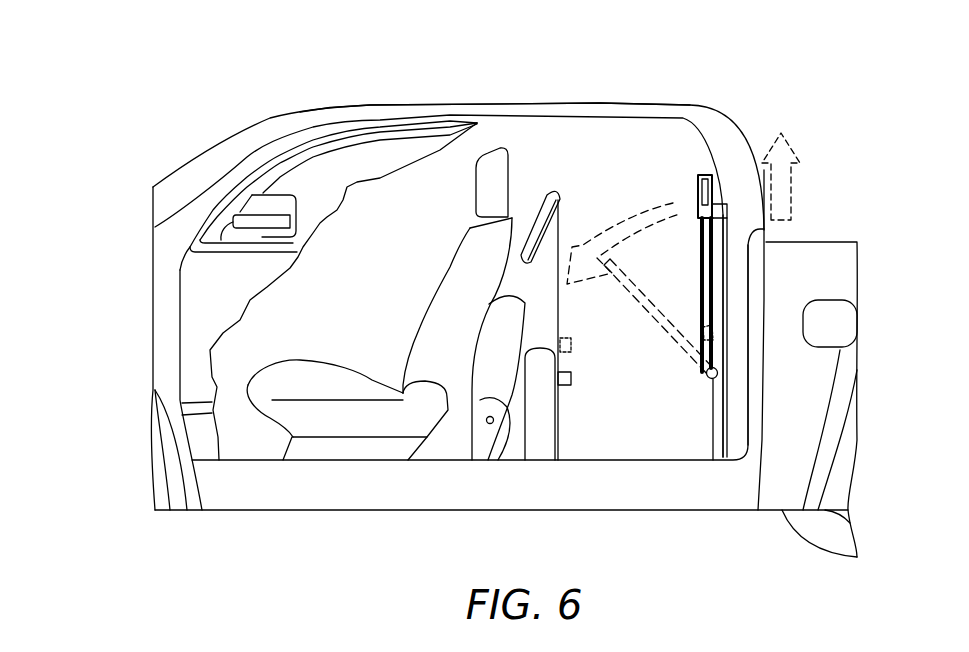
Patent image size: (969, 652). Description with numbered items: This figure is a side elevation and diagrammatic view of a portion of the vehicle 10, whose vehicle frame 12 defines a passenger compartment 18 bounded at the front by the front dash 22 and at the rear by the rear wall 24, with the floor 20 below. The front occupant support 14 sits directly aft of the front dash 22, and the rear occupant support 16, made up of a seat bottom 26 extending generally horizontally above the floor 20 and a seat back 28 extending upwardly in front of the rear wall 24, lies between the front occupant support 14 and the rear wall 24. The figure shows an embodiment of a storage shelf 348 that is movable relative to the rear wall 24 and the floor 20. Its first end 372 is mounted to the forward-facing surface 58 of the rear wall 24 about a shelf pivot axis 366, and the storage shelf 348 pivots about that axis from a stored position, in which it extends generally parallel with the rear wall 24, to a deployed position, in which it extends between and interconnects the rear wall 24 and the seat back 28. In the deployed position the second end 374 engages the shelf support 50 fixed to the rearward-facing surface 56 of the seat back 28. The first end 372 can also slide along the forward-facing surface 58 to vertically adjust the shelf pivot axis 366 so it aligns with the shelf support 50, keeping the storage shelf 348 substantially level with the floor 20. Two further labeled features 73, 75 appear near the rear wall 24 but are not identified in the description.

The vehicle 10 is at (110, 86).
The vehicle frame 12 is at (356, 101).
The front occupant support 14 is at (371, 286).
The rear occupant support 16 is at (526, 187).
The passenger compartment 18 is at (566, 108).
The floor 20 is at (243, 460).
The front dash 22 is at (257, 312).
The rear wall 24 is at (744, 282).
The seat bottom 26 is at (456, 424).
The seat back 28 is at (570, 163).
The first shelf support 50 is at (597, 335).
The rearward-facing surface 56 is at (561, 232).
The forward-facing surface 58 is at (713, 398).
The pillar trim 73 is at (724, 204).
The door sill 75 is at (716, 458).
The storage shelf 348 is at (676, 264).
The shelf pivot axis 366 is at (745, 358).
The first end 372 is at (686, 320).
The second end 374 is at (680, 185).